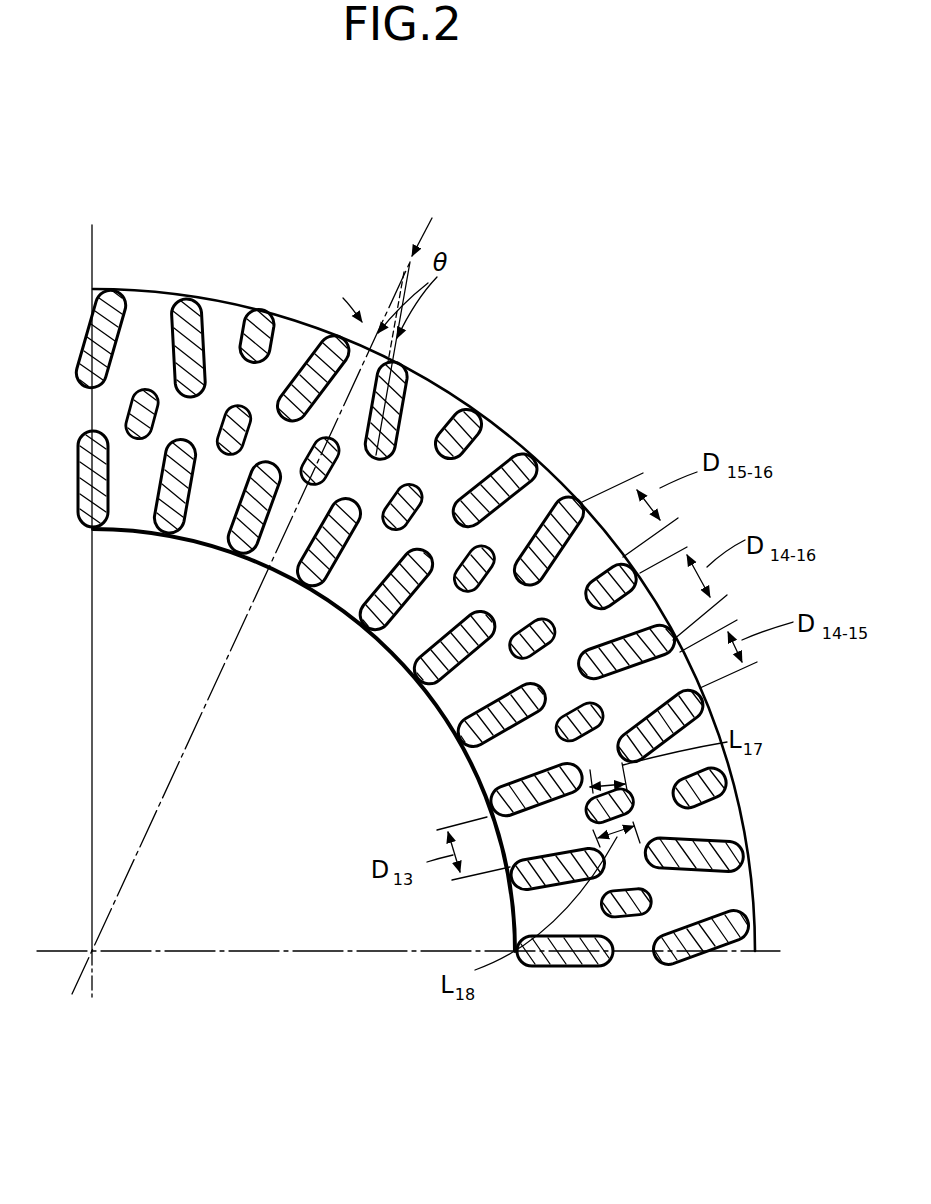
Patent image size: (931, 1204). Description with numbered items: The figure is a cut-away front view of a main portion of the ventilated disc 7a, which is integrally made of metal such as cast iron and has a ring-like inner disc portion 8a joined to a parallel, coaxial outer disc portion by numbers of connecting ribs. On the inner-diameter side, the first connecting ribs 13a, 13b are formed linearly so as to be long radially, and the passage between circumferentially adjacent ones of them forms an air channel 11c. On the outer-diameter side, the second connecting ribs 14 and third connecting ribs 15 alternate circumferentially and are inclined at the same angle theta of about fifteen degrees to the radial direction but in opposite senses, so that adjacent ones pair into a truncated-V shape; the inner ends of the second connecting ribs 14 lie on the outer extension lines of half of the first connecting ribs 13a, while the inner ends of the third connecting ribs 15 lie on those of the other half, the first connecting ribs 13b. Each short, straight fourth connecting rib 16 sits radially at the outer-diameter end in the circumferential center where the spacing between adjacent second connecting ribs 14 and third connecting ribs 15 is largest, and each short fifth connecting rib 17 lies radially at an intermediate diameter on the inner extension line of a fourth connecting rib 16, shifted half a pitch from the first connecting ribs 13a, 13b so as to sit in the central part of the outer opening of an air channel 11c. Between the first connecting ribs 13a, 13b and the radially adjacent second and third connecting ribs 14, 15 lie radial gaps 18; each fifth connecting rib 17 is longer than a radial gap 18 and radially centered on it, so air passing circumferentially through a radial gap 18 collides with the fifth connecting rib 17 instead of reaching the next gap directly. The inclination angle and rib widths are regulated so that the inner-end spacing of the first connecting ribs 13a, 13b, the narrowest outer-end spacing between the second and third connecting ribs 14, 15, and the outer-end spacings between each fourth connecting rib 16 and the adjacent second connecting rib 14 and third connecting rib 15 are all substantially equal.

The ventilated disc 7a is at (523, 337).
The inner disc portion 8a is at (493, 455).
The air channel 11c is at (127, 515).
The first connecting rib 13a is at (87, 517).
The first connecting rib 13b is at (167, 540).
The second connecting rib 14 is at (108, 296).
The third connecting rib 15 is at (186, 302).
The fourth connecting rib 16 is at (256, 312).
The fifth connecting rib 17 is at (143, 397).
The radial gap 18 is at (260, 437).